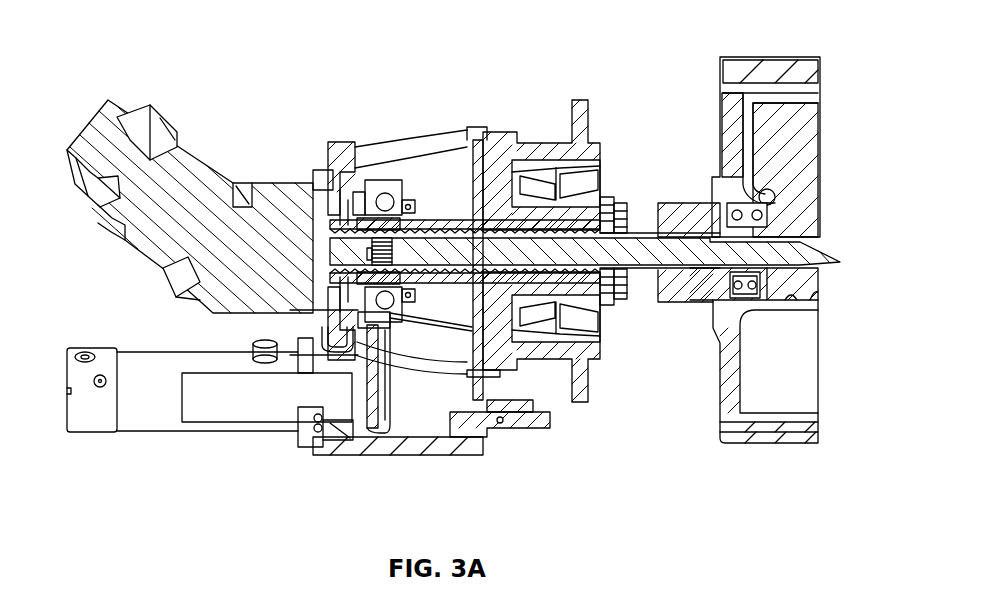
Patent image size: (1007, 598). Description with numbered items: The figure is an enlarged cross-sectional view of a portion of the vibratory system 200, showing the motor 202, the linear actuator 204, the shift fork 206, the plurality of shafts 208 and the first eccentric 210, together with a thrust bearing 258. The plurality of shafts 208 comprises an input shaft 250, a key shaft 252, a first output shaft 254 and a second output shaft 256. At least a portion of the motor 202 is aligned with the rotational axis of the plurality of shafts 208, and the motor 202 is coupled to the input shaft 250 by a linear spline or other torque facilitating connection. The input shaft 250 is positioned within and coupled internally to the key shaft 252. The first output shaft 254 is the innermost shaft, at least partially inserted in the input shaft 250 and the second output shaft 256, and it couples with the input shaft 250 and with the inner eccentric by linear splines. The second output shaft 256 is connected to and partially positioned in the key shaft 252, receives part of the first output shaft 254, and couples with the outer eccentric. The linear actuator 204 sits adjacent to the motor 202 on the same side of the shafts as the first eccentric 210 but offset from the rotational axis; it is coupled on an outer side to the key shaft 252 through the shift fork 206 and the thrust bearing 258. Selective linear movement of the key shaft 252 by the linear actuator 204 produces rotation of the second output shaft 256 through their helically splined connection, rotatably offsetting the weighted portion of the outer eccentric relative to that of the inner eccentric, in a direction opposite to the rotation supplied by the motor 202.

The vibratory system 200 is at (122, 37).
The motor 202 is at (195, 173).
The linear actuator 204 is at (167, 422).
The shift fork 206 is at (372, 373).
The plurality of shafts 208 is at (638, 291).
The first eccentric 210 is at (700, 80).
The input shaft 250 is at (435, 216).
The key shaft 252 is at (468, 217).
The first output shaft 254 is at (606, 226).
The second output shaft 256 is at (630, 212).
The thrust bearing 258 is at (300, 318).